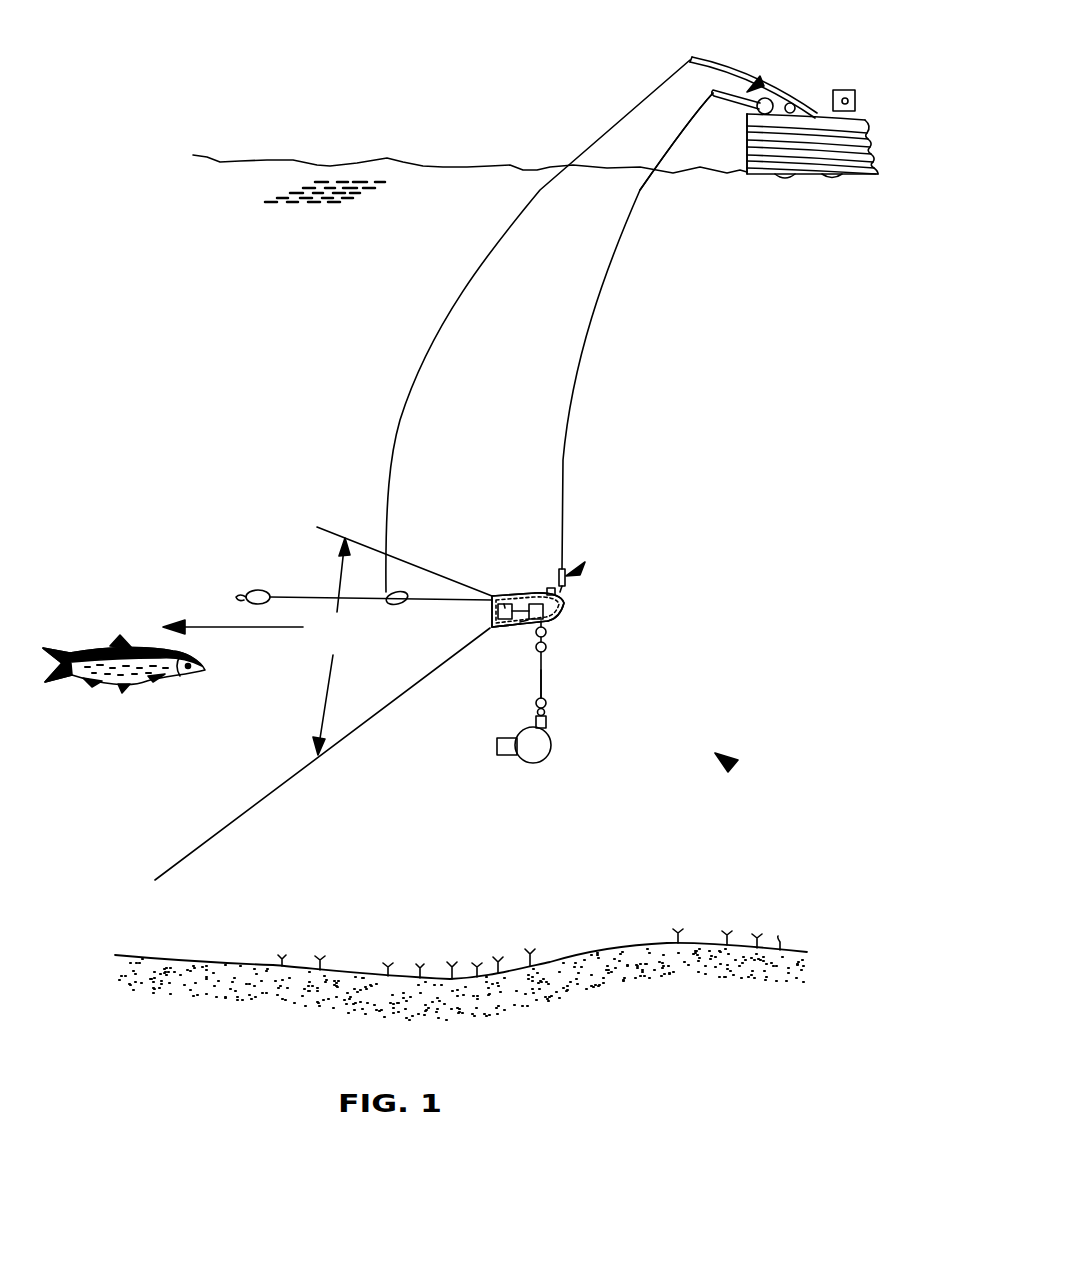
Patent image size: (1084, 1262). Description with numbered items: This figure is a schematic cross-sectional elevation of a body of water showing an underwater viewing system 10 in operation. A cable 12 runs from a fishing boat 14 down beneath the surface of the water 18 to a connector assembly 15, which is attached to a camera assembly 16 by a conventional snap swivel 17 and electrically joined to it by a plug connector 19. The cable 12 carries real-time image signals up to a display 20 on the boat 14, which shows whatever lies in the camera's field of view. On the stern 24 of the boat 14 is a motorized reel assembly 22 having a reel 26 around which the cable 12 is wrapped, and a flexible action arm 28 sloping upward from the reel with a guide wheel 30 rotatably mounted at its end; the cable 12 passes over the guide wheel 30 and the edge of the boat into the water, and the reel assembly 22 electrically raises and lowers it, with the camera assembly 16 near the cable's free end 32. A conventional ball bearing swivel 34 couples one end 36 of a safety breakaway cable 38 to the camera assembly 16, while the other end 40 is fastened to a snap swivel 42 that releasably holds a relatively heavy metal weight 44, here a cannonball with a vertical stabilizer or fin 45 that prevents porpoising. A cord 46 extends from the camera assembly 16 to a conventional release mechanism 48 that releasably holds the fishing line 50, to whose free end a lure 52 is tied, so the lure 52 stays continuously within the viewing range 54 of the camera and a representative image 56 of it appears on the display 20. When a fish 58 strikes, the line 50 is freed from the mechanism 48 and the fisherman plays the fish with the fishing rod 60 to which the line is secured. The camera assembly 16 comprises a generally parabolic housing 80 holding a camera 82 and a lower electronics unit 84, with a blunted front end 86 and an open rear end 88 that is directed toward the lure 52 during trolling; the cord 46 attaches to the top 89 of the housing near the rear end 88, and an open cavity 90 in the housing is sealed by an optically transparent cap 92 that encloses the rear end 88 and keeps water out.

The underwater viewing system 10 is at (733, 767).
The cable 12 is at (597, 307).
The fishing boat 14 is at (735, 177).
The connector assembly 15 is at (575, 565).
The camera assembly 16 is at (498, 637).
The snap swivel 17 is at (567, 588).
The water 18 is at (229, 274).
The plug connector 19 is at (536, 603).
The display 20 is at (845, 90).
The motorized reel assembly 22 is at (760, 82).
The stern 24 is at (747, 134).
The reel 26 is at (794, 103).
The flexible action arm 28 is at (722, 104).
The guide wheel 30 is at (713, 92).
The free end 32 is at (551, 588).
The ball bearing swivel 34 is at (547, 632).
The one end 36 is at (547, 646).
The safety breakaway cable 38 is at (543, 657).
The other end 40 is at (543, 683).
The snap swivel 42 is at (546, 703).
The weight 44 is at (551, 745).
The fin 45 is at (497, 755).
The cord 46 is at (413, 597).
The release mechanism 48 is at (392, 604).
The fishing line 50 is at (450, 307).
The lure 52 is at (258, 590).
The viewing range 54 is at (323, 703).
The image 56 is at (855, 101).
The fish 58 is at (130, 688).
The fishing rod 60 is at (723, 63).
The housing 80 is at (513, 627).
The camera 82 is at (507, 603).
The lower electronics unit 84 is at (503, 598).
The blunted front end 86 is at (568, 603).
The open rear end 88 is at (490, 622).
The top 89 is at (494, 596).
The open cavity 90 is at (528, 625).
The optically transparent cap 92 is at (493, 612).